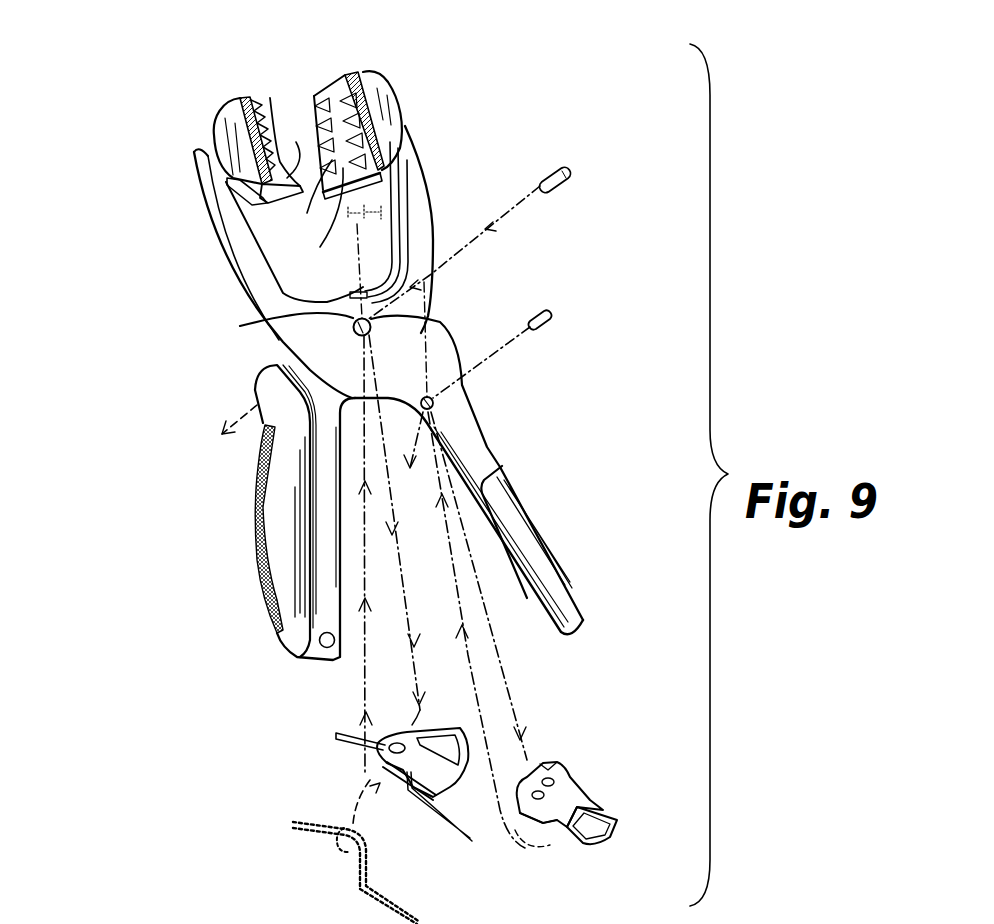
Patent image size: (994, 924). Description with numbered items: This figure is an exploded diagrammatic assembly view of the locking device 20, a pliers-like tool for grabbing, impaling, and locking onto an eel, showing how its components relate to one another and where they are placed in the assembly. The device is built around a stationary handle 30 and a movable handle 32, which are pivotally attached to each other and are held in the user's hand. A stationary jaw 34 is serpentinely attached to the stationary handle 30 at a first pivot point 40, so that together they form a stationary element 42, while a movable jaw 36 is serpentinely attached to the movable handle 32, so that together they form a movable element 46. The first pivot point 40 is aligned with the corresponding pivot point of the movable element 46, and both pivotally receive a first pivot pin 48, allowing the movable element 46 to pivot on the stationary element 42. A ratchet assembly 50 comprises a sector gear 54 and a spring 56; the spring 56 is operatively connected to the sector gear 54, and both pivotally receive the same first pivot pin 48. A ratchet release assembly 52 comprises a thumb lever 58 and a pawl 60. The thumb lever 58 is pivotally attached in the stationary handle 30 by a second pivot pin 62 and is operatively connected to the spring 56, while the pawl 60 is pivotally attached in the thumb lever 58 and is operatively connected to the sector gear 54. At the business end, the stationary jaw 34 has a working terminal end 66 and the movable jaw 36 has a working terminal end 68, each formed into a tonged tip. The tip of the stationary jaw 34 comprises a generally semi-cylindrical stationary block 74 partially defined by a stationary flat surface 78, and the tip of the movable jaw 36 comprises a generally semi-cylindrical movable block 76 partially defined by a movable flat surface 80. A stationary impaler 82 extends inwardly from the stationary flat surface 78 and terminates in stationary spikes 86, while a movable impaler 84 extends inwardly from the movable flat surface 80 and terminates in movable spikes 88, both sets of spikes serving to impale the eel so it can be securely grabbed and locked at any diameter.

The locking device 20 is at (92, 395).
The stationary handle 30 is at (540, 530).
The movable handle 32 is at (258, 512).
The stationary jaw 34 is at (223, 260).
The movable jaw 36 is at (430, 167).
The first pivot point 40 is at (348, 379).
The stationary element 42 is at (490, 447).
The movable element 46 is at (253, 502).
The first pivot pin 48 is at (549, 165).
The ratchet assembly 50 is at (450, 724).
The ratchet release assembly 52 is at (588, 807).
The sector gear 54 is at (472, 792).
The spring 56 is at (348, 746).
The thumb lever 58 is at (600, 800).
The pawl 60 is at (556, 832).
The second pivot pin 62 is at (541, 311).
The working terminal end 66 is at (206, 114).
The working terminal end 68 is at (418, 110).
The stationary block 74 is at (196, 97).
The movable block 76 is at (383, 85).
The stationary flat surface 78 is at (247, 97).
The movable flat surface 80 is at (352, 75).
The stationary impaler 82 is at (277, 118).
The movable impaler 84 is at (306, 199).
The stationary spikes 86 is at (292, 145).
The movable spikes 88 is at (323, 223).